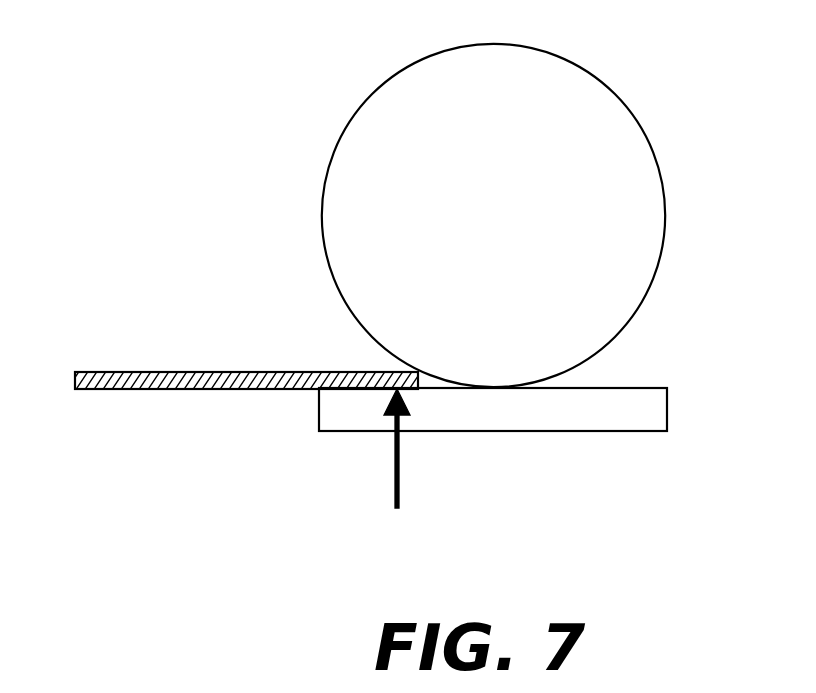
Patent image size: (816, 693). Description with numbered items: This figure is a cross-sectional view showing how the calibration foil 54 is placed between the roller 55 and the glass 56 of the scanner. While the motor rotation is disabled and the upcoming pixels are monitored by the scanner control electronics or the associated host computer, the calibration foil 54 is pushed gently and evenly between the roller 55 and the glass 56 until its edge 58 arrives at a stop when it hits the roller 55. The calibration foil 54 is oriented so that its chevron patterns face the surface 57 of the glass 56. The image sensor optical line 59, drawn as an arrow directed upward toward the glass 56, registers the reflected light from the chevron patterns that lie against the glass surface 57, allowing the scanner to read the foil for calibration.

The calibration foil 54 is at (118, 373).
The roller 55 is at (555, 102).
The glass 56 is at (580, 404).
The surface of the glass 57 is at (382, 389).
The edge 58 is at (418, 373).
The image sensor optical line 59 is at (397, 475).